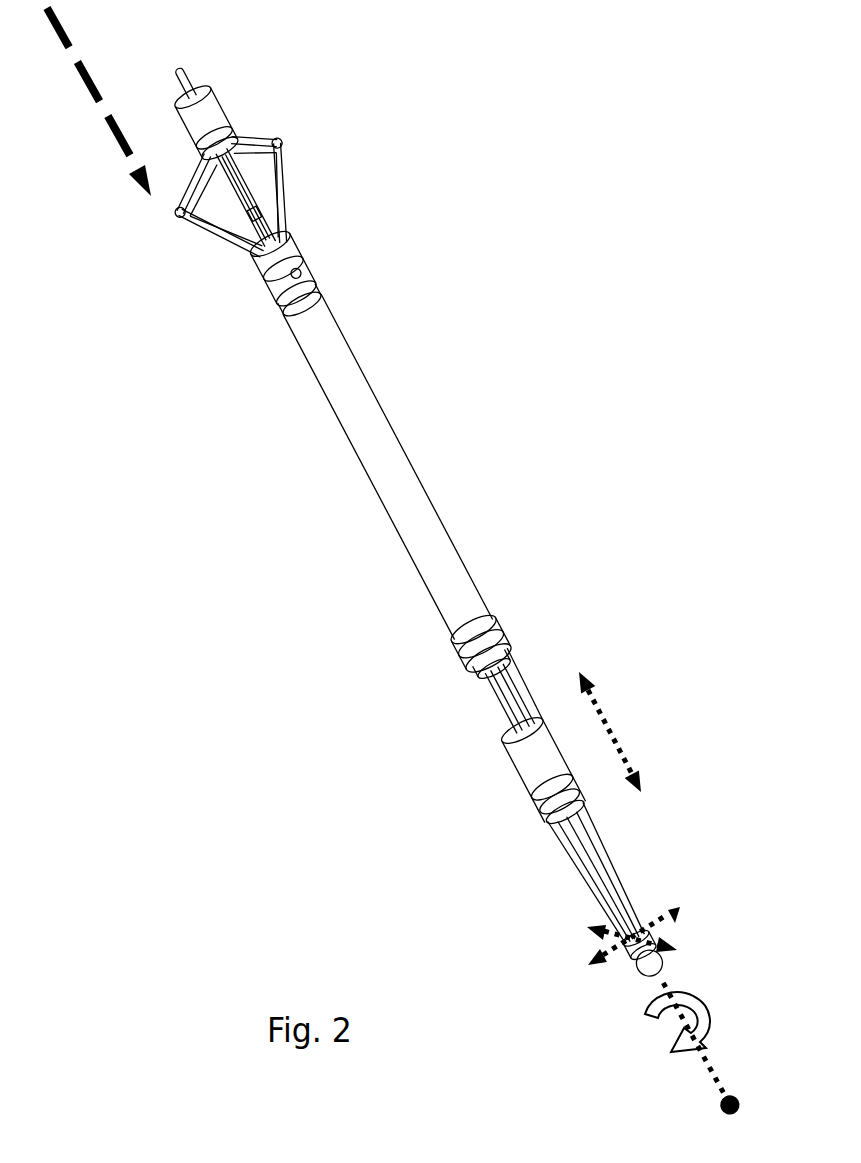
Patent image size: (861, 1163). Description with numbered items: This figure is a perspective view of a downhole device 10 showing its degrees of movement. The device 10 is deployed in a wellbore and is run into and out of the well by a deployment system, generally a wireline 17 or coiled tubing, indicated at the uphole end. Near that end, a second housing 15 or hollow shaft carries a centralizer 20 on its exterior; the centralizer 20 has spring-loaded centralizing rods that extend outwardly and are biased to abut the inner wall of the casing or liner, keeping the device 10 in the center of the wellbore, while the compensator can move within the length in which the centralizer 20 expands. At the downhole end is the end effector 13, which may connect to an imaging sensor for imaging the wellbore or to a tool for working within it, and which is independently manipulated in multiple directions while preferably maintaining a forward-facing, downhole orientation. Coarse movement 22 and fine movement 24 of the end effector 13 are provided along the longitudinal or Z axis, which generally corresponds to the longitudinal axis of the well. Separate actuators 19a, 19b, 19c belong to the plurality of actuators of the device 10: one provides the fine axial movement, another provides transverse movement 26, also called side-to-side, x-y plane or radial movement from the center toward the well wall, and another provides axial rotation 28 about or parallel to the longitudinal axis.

The downhole device 10 is at (416, 522).
The end effector 13 is at (699, 1036).
The second housing 15 is at (312, 200).
The wireline 17 is at (111, 99).
The actuator 19a is at (645, 732).
The actuator 19b is at (625, 1038).
The actuator 19c is at (572, 938).
The centralizer 20 is at (312, 200).
The coarse movement 22 is at (111, 99).
The fine movement 24 is at (645, 732).
The transverse movement 26 is at (572, 938).
The axial rotation 28 is at (625, 1038).